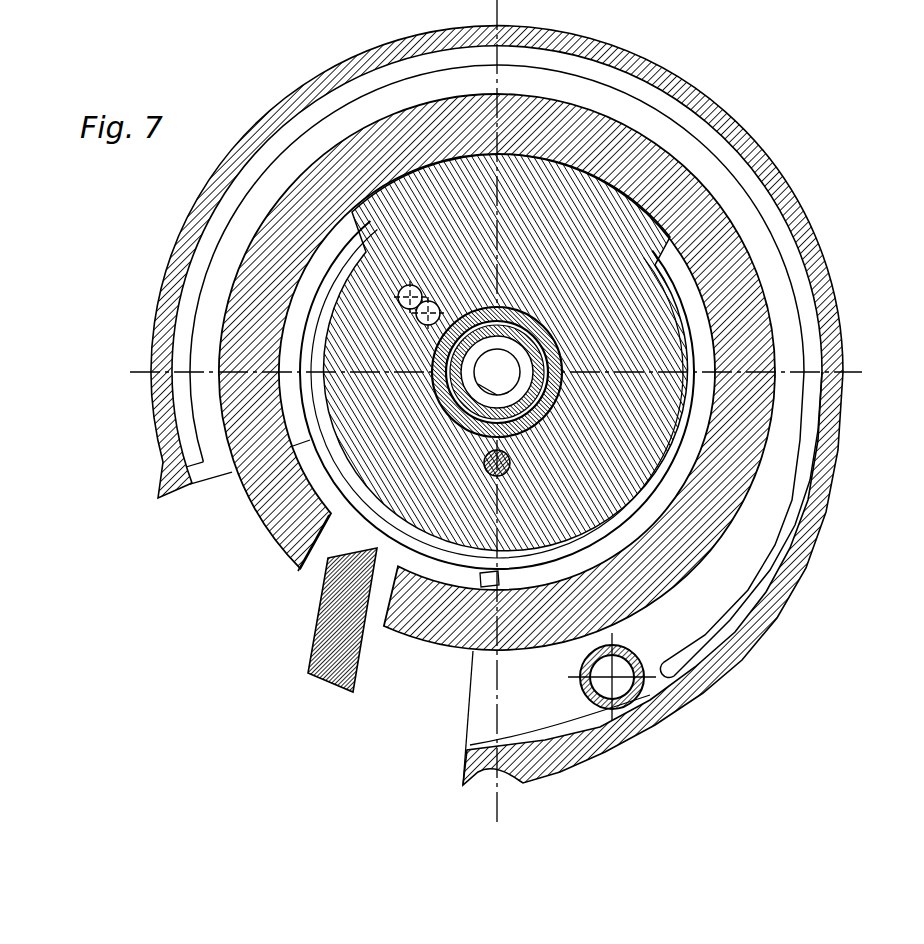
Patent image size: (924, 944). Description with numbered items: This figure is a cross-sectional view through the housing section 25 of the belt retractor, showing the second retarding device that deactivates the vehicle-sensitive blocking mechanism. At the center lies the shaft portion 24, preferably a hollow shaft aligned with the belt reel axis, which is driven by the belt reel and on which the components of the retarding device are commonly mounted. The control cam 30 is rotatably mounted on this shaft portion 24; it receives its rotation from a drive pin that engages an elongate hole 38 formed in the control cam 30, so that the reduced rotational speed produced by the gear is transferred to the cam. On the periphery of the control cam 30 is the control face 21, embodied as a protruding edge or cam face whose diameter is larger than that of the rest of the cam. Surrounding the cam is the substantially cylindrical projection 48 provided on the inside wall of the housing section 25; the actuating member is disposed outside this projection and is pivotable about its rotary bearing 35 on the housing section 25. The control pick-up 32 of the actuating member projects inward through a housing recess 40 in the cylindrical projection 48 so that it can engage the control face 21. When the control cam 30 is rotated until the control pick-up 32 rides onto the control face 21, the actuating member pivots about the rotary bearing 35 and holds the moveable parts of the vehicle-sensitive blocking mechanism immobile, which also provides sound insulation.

The control face 21 is at (582, 159).
The shaft portion 24 is at (543, 322).
The housing section 25 is at (838, 490).
The control cam 30 is at (640, 297).
The control pick-up 32 is at (316, 643).
The rotary bearing 35 is at (642, 686).
The elongate hole 38 is at (400, 303).
The housing recess 40 is at (318, 572).
The cylindrical projection 48 is at (265, 497).